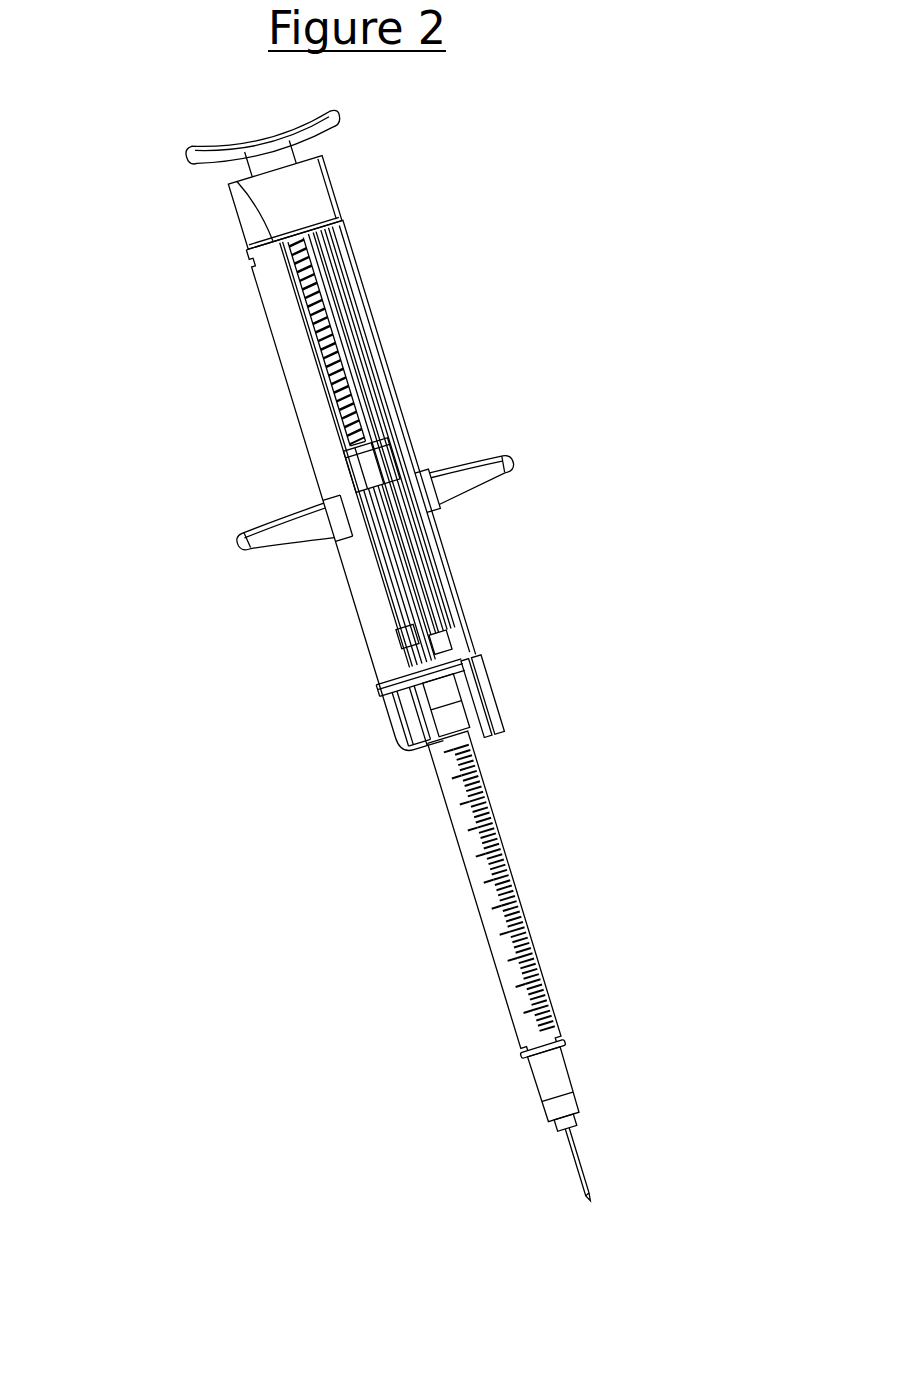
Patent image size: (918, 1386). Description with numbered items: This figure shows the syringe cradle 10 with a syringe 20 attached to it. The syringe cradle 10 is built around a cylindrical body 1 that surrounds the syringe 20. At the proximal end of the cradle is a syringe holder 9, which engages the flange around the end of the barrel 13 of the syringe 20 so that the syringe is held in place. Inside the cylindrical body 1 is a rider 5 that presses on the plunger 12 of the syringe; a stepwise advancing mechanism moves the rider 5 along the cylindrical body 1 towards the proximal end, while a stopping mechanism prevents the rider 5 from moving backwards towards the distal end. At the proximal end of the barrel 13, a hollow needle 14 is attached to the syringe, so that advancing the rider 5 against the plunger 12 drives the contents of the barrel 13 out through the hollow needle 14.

The cylindrical body 1 is at (316, 437).
The rider 5 is at (373, 463).
The syringe holder 9 is at (452, 703).
The syringe cradle 10 is at (373, 443).
The plunger 12 is at (405, 603).
The barrel 13 is at (467, 857).
The hollow needle 14 is at (582, 1187).
The syringe 20 is at (496, 967).